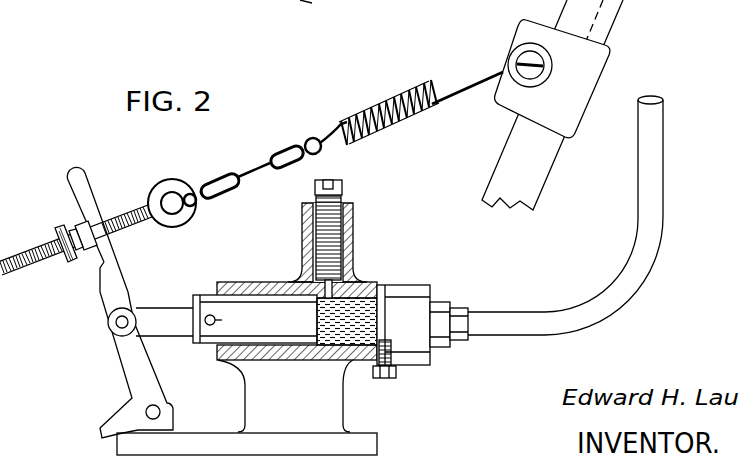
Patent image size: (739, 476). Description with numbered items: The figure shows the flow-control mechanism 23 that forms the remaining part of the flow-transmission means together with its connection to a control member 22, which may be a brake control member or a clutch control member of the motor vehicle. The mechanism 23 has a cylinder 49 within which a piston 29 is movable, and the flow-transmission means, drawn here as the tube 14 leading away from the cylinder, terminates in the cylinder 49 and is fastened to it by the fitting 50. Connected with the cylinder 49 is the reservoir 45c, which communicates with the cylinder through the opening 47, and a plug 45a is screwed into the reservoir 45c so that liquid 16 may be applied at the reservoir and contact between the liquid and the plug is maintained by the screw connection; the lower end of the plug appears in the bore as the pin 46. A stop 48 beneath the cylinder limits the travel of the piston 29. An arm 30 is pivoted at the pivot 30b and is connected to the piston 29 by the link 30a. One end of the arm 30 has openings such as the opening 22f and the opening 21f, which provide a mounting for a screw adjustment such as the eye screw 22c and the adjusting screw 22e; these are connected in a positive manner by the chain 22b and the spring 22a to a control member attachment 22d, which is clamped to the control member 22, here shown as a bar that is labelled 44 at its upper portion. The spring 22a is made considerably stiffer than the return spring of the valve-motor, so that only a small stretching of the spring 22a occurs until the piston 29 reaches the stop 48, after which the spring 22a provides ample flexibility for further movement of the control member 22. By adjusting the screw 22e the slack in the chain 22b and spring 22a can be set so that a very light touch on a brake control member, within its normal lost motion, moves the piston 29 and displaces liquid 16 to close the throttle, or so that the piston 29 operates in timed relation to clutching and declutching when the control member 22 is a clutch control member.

The tube 14 is at (572, 322).
The liquid 16 is at (337, 342).
The opening 21f is at (96, 182).
The control member 22 is at (548, 176).
The spring 22a is at (392, 138).
The chain 22b is at (277, 152).
The screw adjustment 22c is at (171, 186).
The control member attachment 22d is at (528, 42).
The screw adjustment 22e is at (62, 270).
The opening 22f is at (97, 245).
The flow-control mechanism 23 is at (378, 440).
The piston 29 is at (200, 345).
The arm 30 is at (128, 290).
The link 30a is at (172, 308).
The pivot 30b is at (160, 412).
The arm 44 is at (315, 2).
The plug 45a is at (343, 187).
The reservoir 45c is at (353, 240).
The pin 46 is at (353, 262).
The opening 47 is at (300, 276).
The stop 48 is at (395, 378).
The cylinder 49 is at (430, 362).
The fastening 50 is at (450, 300).